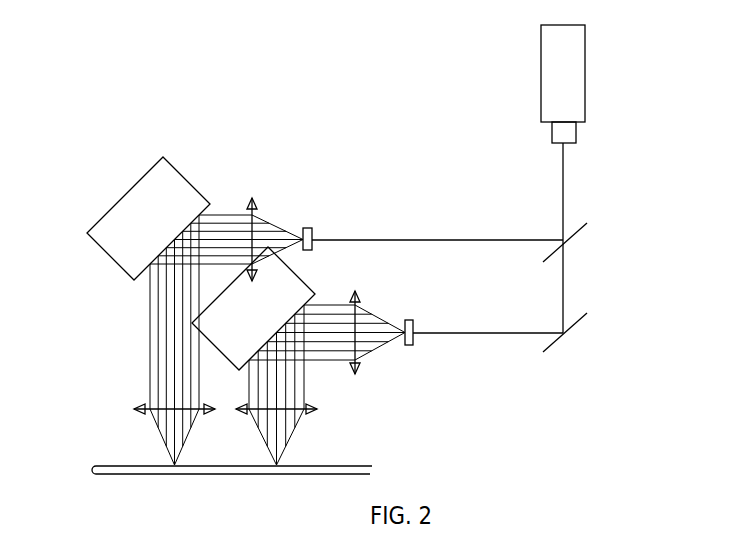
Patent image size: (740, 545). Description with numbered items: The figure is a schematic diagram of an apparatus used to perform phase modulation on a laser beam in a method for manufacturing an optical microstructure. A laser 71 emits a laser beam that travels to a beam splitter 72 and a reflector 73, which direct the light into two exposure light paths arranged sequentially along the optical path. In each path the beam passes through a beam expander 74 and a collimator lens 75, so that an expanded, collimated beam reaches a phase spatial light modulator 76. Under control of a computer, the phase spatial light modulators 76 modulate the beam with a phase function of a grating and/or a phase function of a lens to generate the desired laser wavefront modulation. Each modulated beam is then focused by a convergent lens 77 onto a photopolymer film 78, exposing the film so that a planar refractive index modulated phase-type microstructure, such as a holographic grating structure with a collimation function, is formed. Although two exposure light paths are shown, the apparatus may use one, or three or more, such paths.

The laser 71 is at (573, 80).
The beam splitter 72 is at (578, 232).
The reflector 73 is at (578, 325).
The beam expander 74 is at (311, 228).
The collimator lens 75 is at (252, 200).
The phase spatial light modulator 76 is at (178, 172).
The convergent lens 77 is at (137, 409).
The photopolymer film 78 is at (372, 470).